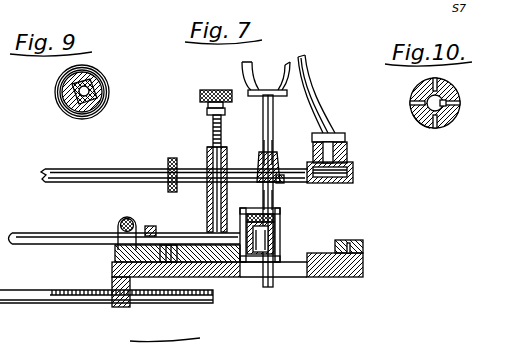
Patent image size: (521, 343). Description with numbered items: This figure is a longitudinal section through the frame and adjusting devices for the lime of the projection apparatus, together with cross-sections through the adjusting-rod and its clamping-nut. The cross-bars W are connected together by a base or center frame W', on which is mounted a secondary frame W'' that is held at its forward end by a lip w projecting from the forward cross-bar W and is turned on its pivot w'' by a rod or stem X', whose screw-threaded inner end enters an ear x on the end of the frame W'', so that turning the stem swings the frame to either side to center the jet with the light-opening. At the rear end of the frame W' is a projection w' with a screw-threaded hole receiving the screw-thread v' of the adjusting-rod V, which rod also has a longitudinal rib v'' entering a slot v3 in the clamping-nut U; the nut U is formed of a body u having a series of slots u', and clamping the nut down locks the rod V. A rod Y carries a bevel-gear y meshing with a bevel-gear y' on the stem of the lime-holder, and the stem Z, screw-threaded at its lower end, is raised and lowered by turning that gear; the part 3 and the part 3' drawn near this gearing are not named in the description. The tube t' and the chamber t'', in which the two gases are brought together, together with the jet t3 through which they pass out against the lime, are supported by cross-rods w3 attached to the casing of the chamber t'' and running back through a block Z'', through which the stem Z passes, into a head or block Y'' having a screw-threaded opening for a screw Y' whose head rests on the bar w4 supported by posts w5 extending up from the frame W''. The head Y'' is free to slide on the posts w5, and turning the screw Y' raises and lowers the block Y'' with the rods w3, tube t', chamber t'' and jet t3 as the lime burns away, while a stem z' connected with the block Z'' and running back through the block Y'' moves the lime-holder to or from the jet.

In FIG. 9, the body u is at (68, 92).
In FIG. 10, the body u is at (418, 124).
In FIG. 9, the longitudinal rib v'' is at (96, 78).
In FIG. 9, the slot v3 is at (104, 88).
In FIG. 10, the slot v3 is at (450, 96).
In FIG. 9, the adjusting-rod V is at (92, 92).
In FIG. 7, the adjusting-rod V is at (106, 288).
In FIG. 10, the clamping-nut U is at (412, 103).
In FIG. 10, the slots u' is at (443, 107).
In FIG. 10, the projection w' is at (451, 84).
In FIG. 7, the projection w' is at (120, 303).
In FIG. 7, the stem z' is at (266, 164).
In FIG. 7, the bar w4 is at (226, 105).
In FIG. 7, the posts w5 is at (224, 144).
In FIG. 7, the jet t3 is at (323, 94).
In FIG. 7, the screw Y' is at (204, 136).
In FIG. 7, the tube t' is at (174, 163).
In FIG. 7, the collar 3' is at (257, 164).
In FIG. 7, the block Z'' is at (283, 153).
In FIG. 7, the chamber t'' is at (346, 162).
In FIG. 7, the rod Y is at (125, 230).
In FIG. 7, the rod or stem X' is at (114, 222).
In FIG. 7, the ear x is at (120, 226).
In FIG. 7, the head or block Y'' is at (160, 186).
In FIG. 7, the stem Z is at (254, 200).
In FIG. 7, the cross-rods w3 is at (288, 184).
In FIG. 7, the bevel-gear y' is at (279, 211).
In FIG. 7, the bevel-gear y is at (268, 235).
In FIG. 7, the spring 3 is at (272, 240).
In FIG. 7, the secondary frame W'' is at (337, 236).
In FIG. 7, the lip w is at (345, 240).
In FIG. 7, the cross-bars W is at (251, 261).
In FIG. 7, the base or center frame W' is at (274, 281).
In FIG. 7, the pivot w'' is at (175, 236).
In FIG. 7, the block y''' is at (178, 228).
In FIG. 7, the screw-thread v' is at (131, 304).